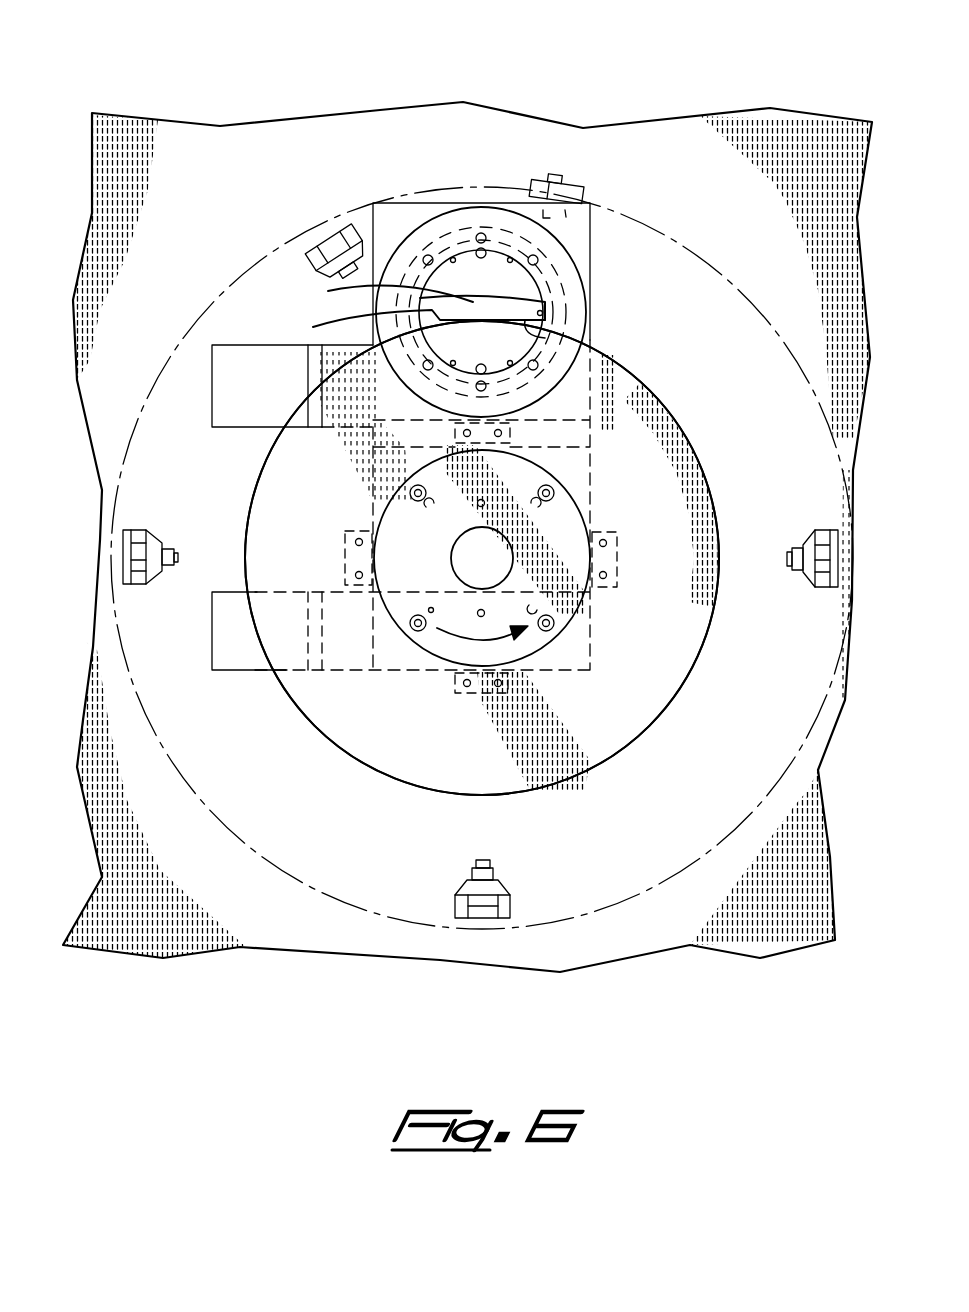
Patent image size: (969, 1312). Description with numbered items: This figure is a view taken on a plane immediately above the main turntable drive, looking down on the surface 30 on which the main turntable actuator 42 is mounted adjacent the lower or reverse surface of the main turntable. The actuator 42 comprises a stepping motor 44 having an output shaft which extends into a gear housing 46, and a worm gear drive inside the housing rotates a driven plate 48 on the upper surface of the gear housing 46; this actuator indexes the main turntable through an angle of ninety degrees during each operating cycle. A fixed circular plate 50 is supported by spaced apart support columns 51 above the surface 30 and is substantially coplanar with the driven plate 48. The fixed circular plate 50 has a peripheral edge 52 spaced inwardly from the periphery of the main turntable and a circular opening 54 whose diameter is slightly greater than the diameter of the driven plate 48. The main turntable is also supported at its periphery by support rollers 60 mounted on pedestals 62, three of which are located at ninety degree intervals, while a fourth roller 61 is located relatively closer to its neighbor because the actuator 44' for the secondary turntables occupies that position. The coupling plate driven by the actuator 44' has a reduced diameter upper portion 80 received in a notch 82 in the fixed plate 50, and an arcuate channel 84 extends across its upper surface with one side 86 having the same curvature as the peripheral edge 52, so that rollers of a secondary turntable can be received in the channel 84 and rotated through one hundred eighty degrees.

The surface 30 is at (442, 150).
The main turntable actuator 42 is at (593, 622).
The stepping motor 44 is at (267, 680).
The actuator 44' is at (300, 378).
The gear housing 46 is at (582, 232).
The driven plate 48 is at (550, 530).
The fixed circular plate 50 is at (607, 740).
The support columns 51 is at (592, 443).
The peripheral edge 52 is at (705, 478).
The circular opening 54 is at (570, 508).
The support rollers 60 is at (135, 567).
The fourth roller 61 is at (337, 238).
The pedestals 62 is at (308, 252).
The reduced diameter upper portion 80 is at (530, 285).
The notch 82 is at (545, 323).
The arcuate channel 84 is at (421, 299).
The side 86 is at (413, 327).